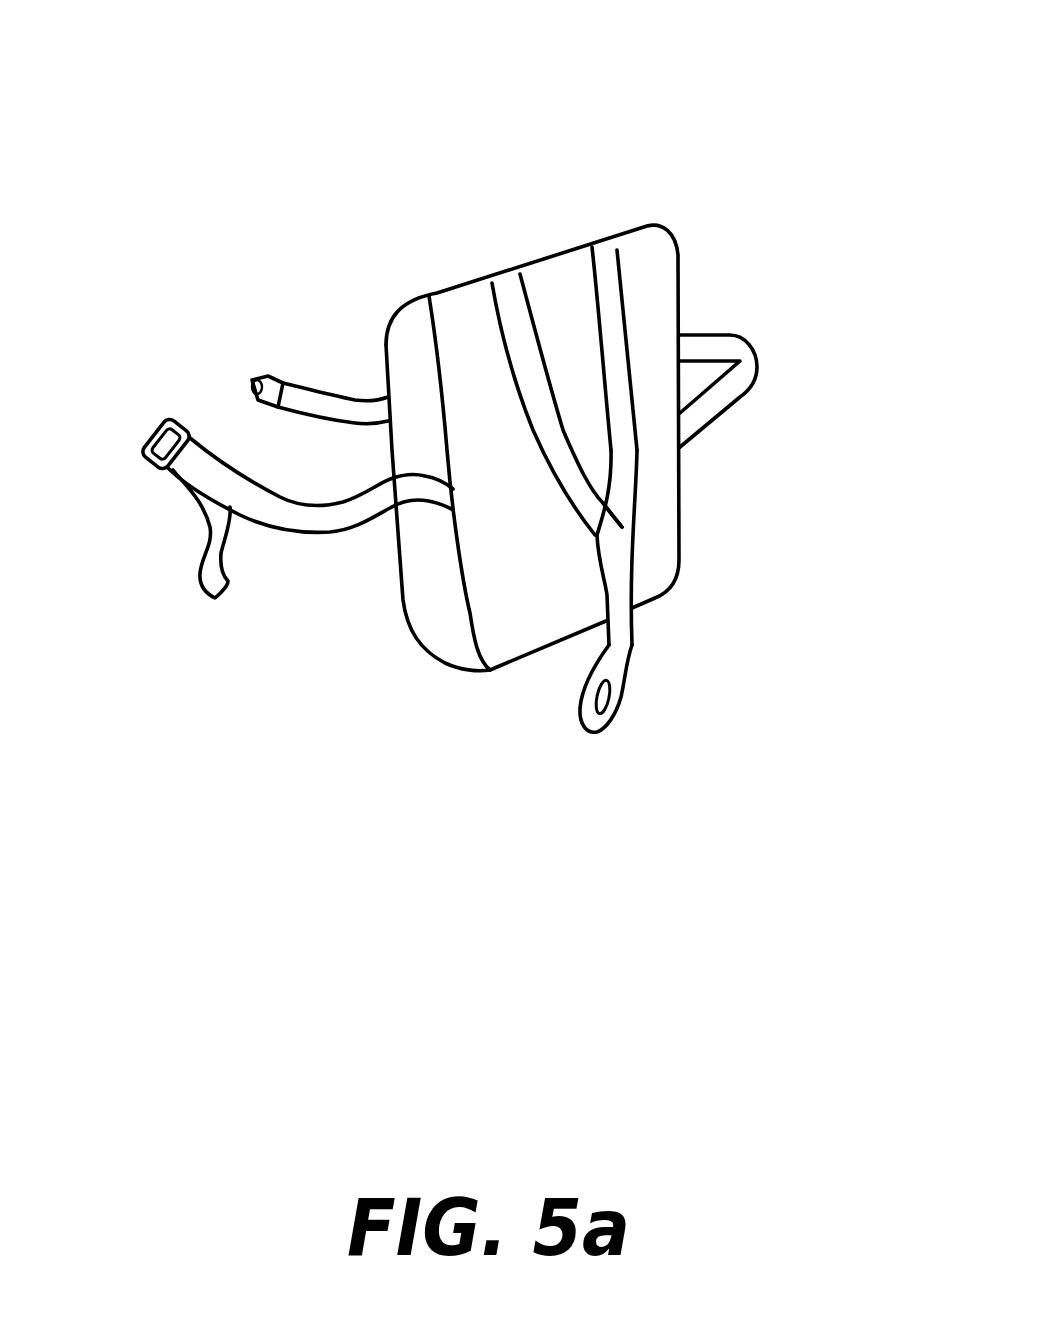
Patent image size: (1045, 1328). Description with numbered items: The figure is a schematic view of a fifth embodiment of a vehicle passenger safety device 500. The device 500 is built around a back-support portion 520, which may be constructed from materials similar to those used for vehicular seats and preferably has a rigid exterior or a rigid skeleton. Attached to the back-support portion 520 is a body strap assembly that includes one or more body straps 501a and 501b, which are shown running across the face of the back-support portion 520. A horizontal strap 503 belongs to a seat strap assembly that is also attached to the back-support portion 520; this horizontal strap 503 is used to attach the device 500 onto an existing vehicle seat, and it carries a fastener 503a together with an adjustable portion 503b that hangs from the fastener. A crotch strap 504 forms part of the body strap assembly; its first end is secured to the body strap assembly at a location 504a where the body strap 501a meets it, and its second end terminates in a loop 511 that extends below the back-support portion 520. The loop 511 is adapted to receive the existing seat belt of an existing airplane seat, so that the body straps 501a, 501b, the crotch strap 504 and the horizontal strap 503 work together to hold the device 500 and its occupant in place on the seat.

The vehicle passenger safety device 500 is at (428, 98).
The body strap 501a is at (507, 287).
The body strap 501b is at (615, 313).
The horizontal strap 503 is at (753, 372).
The fastener 503a is at (166, 422).
The adjustable portion 503b is at (207, 598).
The crotch strap 504 is at (623, 647).
The location 504a is at (610, 523).
The loop 511 is at (573, 718).
The back-support portion 520 is at (400, 340).